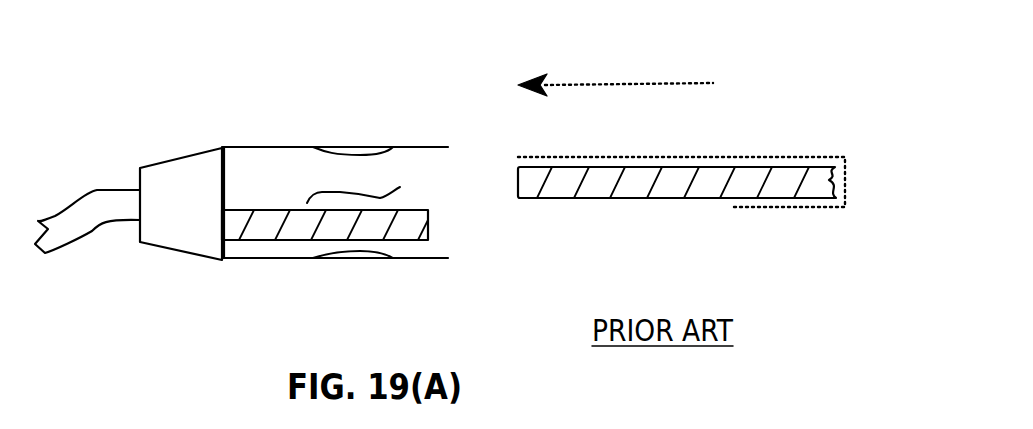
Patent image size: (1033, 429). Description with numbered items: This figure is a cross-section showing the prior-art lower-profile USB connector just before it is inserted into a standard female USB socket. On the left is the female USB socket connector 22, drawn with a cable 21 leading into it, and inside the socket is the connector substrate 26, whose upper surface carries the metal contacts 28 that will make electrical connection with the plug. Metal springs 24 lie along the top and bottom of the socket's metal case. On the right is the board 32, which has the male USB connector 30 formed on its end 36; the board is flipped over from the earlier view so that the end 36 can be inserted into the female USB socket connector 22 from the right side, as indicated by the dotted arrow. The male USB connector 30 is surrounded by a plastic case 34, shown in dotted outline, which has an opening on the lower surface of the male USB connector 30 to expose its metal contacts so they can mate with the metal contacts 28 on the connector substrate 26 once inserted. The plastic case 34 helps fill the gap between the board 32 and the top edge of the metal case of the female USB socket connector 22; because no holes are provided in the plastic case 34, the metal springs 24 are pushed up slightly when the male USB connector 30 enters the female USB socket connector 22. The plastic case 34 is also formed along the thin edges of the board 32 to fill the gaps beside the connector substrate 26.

The cable 21 is at (97, 201).
The female USB socket connector 22 is at (268, 148).
The metal springs 24 is at (363, 156).
The connector substrate 26 is at (243, 240).
The metal contacts 28 is at (400, 187).
The male USB connector 30 is at (606, 164).
The board 32 is at (793, 199).
The plastic case 34 is at (702, 158).
The end 36 is at (523, 199).